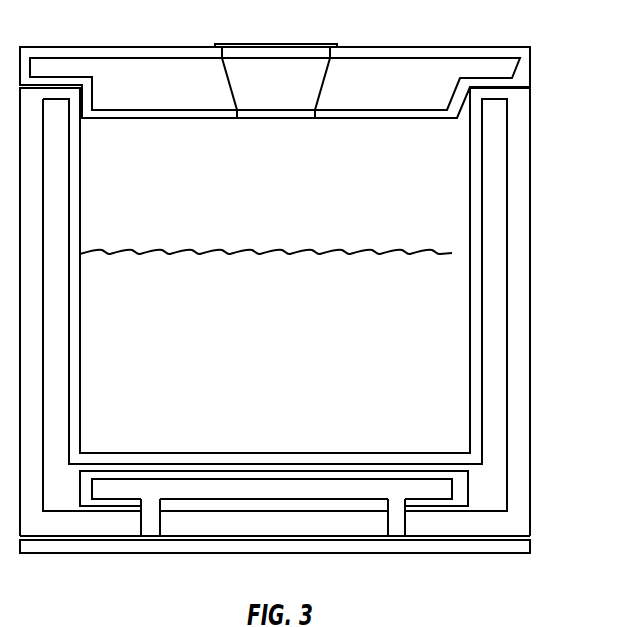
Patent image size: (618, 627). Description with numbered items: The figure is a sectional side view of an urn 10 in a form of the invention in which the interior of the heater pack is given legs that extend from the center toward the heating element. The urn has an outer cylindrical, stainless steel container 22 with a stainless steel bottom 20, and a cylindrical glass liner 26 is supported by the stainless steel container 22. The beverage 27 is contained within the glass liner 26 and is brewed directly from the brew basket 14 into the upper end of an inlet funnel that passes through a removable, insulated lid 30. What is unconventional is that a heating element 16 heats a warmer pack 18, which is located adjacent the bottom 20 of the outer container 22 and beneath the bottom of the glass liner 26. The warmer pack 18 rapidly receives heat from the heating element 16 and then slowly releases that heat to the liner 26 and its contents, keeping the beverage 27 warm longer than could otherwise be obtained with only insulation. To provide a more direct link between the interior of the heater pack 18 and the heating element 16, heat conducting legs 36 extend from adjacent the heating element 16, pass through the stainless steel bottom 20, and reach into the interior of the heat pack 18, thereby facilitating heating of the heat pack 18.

The urn 10 is at (531, 177).
The brew basket 14 is at (292, 45).
The heating element 16 is at (520, 548).
The warmer pack 18 is at (468, 490).
The bottom 20 is at (273, 527).
The outer cylindrical stainless steel container 22 is at (520, 328).
The liner 26 is at (482, 403).
The beverage 27 is at (452, 252).
The insulated lid 30 is at (520, 80).
The heat conducting legs 36 is at (152, 525).